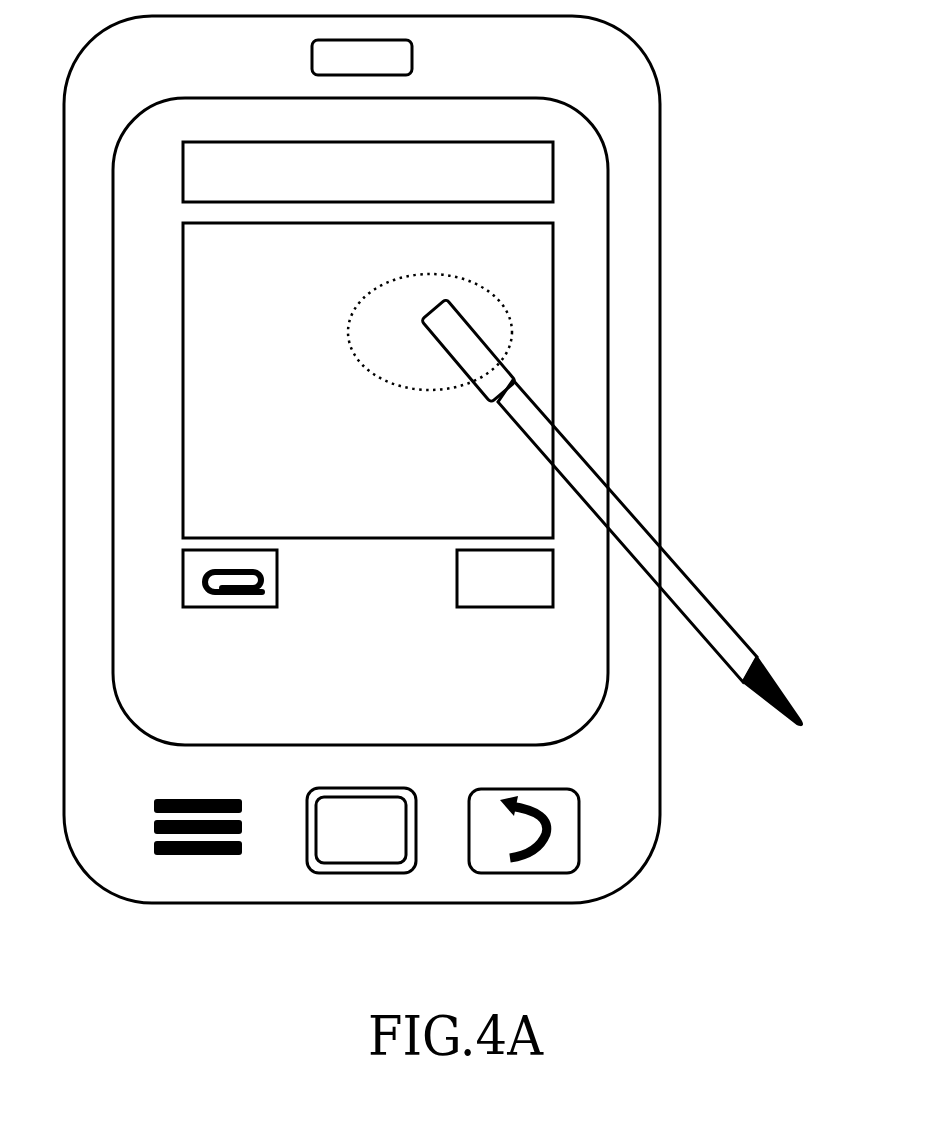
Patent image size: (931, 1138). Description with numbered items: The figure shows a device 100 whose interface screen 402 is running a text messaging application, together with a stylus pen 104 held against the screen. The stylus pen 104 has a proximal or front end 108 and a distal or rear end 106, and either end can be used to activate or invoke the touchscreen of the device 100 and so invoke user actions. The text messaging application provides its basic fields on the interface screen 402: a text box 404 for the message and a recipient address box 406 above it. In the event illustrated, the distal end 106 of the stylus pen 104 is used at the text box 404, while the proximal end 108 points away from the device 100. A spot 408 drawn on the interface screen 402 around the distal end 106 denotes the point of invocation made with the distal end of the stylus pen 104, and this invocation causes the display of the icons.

The device 100 is at (698, 98).
The stylus pen 104 is at (610, 477).
The distal end 106 is at (482, 338).
The proximal end 108 is at (777, 672).
The interface screen 402 is at (397, 621).
The text box 404 is at (393, 510).
The recipient address box 406 is at (445, 191).
The spot 408 is at (488, 292).